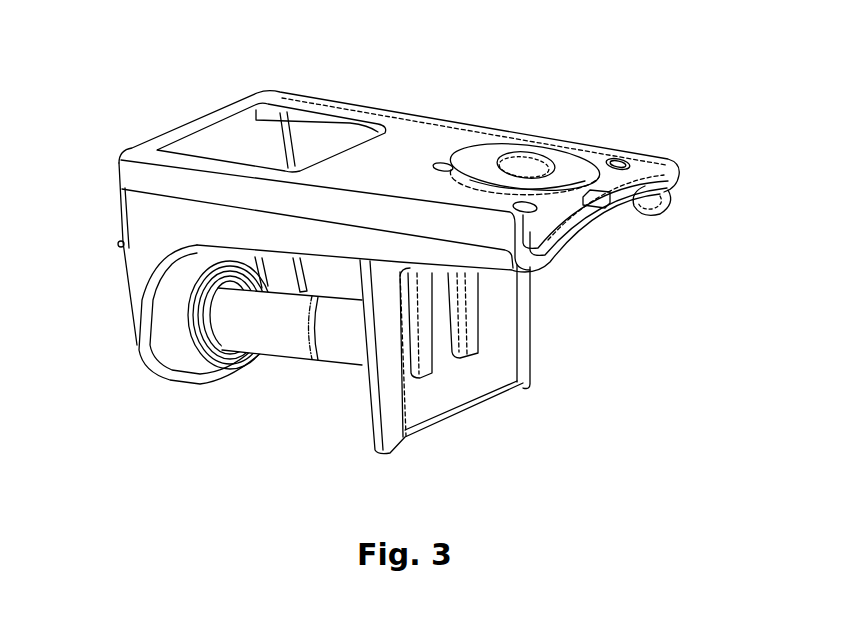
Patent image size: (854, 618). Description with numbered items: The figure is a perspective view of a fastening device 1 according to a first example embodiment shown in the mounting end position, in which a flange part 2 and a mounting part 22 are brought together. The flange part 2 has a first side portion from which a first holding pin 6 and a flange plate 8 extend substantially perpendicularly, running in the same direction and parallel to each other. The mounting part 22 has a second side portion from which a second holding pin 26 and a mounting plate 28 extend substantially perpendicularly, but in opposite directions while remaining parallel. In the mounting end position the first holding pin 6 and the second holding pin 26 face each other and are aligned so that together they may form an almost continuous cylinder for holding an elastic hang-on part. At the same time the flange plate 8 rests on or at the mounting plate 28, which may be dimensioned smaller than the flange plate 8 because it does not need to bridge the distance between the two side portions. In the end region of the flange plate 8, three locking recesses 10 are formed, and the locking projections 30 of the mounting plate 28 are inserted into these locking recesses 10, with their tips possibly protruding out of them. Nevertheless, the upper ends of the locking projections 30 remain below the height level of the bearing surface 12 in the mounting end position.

The fastening device 1 is at (70, 59).
The flange part 2 is at (100, 222).
The first holding pin 6 is at (243, 333).
The flange plate 8 is at (397, 127).
The locking recesses 10 is at (447, 152).
The bearing surface 12 is at (460, 196).
The mounting part 22 is at (547, 367).
The second holding pin 26 is at (353, 340).
The mounting plate 28 is at (560, 220).
The locking projections 30 is at (521, 202).